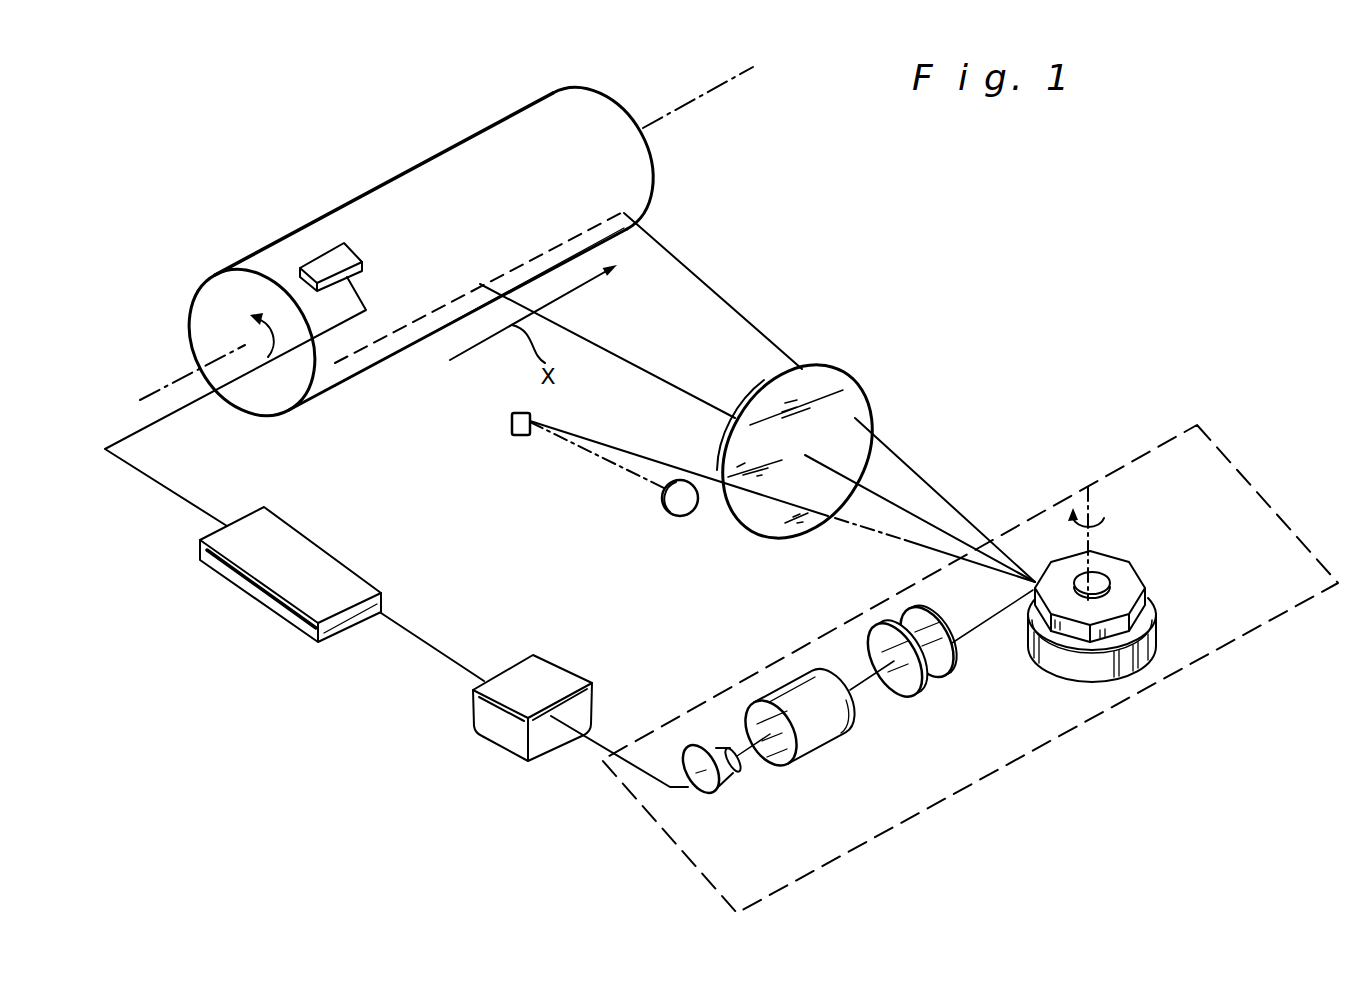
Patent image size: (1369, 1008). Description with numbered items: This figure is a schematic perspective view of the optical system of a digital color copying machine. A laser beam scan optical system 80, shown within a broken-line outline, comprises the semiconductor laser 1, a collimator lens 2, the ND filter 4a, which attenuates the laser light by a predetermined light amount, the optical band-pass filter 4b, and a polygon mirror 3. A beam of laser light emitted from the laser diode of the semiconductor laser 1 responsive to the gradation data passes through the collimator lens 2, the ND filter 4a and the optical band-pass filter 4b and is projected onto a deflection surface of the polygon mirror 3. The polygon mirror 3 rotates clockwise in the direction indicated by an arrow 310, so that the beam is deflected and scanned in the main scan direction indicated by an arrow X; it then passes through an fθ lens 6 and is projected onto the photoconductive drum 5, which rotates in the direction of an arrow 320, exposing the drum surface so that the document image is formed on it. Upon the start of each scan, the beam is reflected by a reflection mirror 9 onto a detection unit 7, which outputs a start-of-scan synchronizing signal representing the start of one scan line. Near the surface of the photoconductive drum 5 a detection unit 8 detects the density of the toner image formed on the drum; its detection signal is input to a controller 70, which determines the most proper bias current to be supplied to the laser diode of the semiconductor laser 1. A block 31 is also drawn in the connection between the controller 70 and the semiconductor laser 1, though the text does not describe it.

The semiconductor laser 1 is at (713, 790).
The collimator lens 2 is at (827, 732).
The polygon mirror 3 is at (1133, 585).
The ND filter 4a is at (918, 690).
The optical band-pass filter 4b is at (958, 672).
The photoconductive drum 5 is at (357, 218).
The fθ lens 6 is at (822, 383).
The detection unit 7 is at (683, 517).
The detection unit 8 is at (327, 262).
The reflection mirror 9 is at (517, 437).
The laser drive circuit 31 is at (560, 664).
The controller 70 is at (320, 542).
The laser beam scan optical system 80 is at (1185, 427).
The arrow 310 is at (1078, 530).
The arrow 320 is at (257, 341).